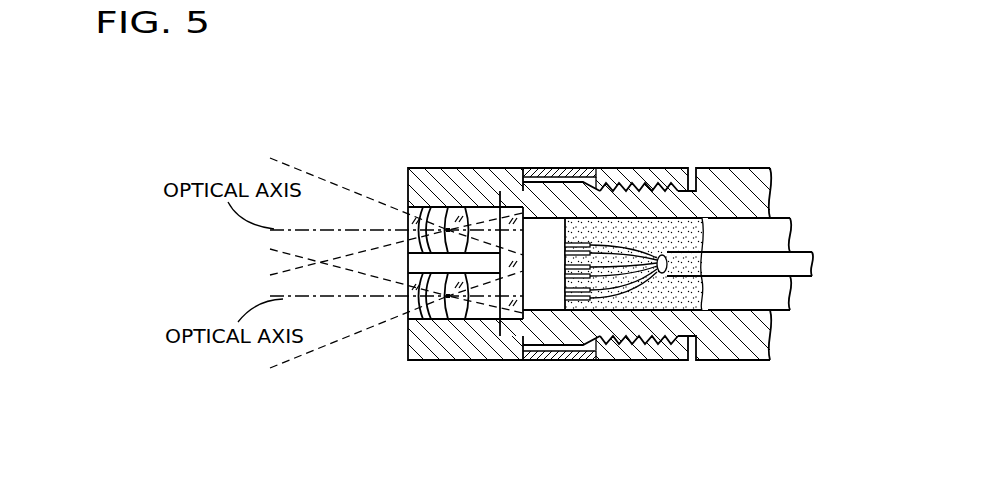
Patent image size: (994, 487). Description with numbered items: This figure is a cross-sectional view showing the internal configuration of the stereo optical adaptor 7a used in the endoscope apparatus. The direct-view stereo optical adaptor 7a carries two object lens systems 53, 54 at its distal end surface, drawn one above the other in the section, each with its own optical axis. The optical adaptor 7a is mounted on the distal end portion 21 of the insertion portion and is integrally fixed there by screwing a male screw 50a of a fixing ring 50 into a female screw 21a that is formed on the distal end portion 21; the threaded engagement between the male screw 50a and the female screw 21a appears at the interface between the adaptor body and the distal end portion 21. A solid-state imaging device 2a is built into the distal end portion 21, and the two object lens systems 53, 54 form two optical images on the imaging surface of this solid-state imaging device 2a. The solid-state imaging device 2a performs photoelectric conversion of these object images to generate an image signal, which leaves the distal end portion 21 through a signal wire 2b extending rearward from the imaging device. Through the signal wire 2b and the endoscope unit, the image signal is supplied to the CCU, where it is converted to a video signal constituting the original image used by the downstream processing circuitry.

The stereo optical adaptor 7a is at (503, 130).
The solid-state imaging device 2a is at (558, 205).
The female screw 21a is at (641, 160).
The distal end portion 21 is at (635, 251).
The signal wire 2b is at (800, 262).
The object lens system 53 is at (452, 207).
The object lens system 54 is at (457, 319).
The fixing ring 50 is at (594, 374).
The male screw 50a is at (645, 326).